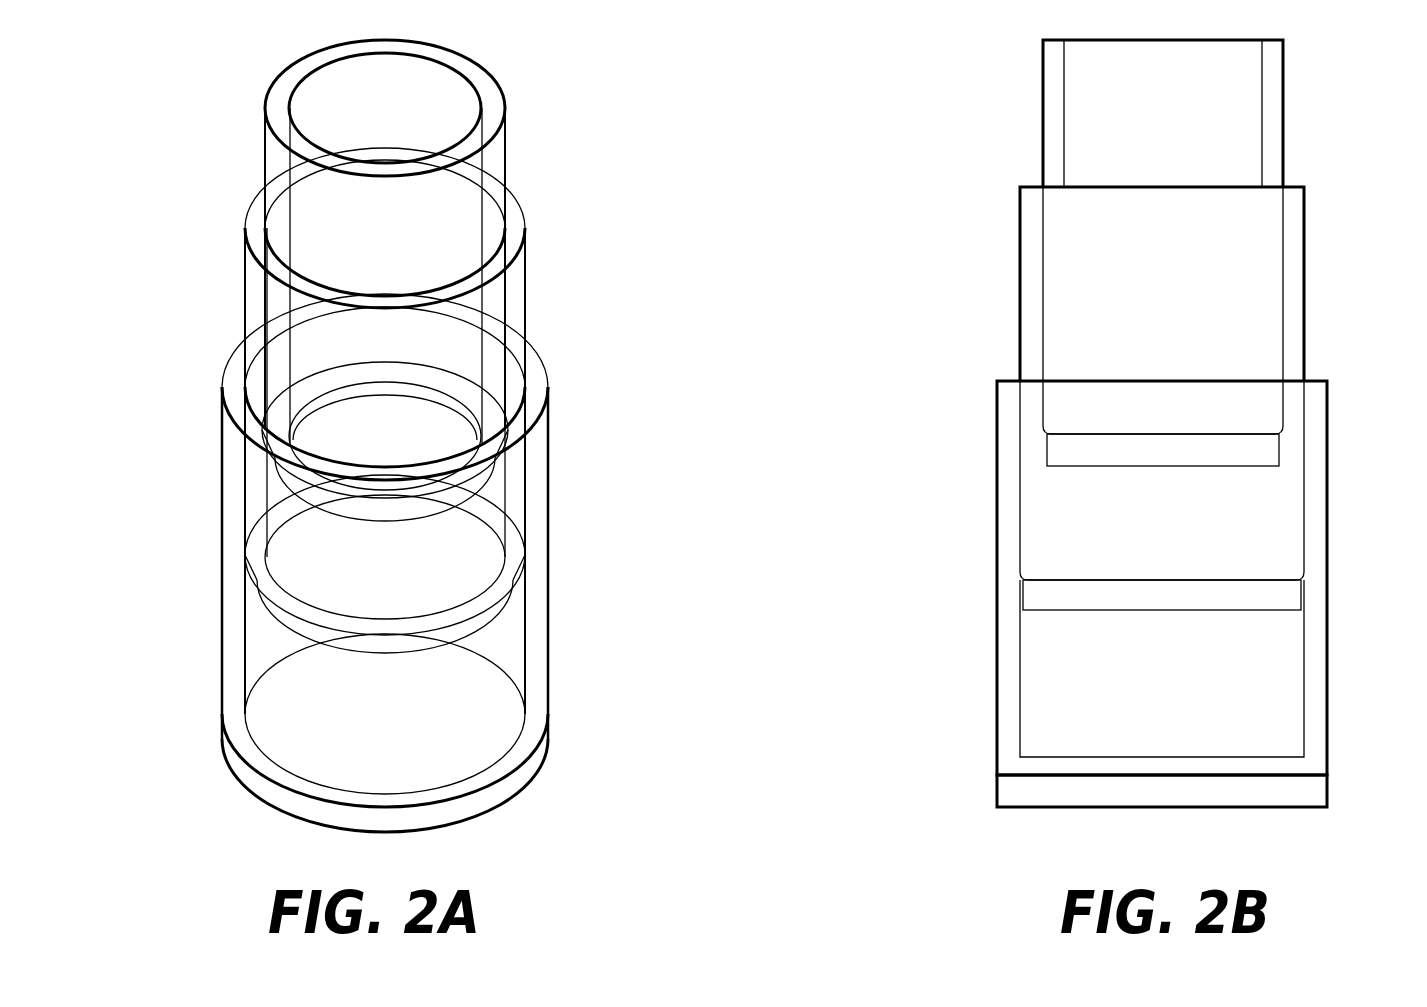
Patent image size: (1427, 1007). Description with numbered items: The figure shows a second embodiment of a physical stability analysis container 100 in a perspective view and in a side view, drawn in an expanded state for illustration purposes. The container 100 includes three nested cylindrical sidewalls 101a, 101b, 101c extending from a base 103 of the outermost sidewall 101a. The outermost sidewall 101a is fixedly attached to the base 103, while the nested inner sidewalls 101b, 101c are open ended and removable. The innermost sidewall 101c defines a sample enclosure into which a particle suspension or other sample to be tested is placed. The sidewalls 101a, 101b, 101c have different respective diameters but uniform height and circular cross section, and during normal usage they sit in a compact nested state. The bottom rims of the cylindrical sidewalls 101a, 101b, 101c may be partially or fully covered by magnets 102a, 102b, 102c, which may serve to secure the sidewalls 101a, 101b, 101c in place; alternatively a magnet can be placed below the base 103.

In FIG. 2A, the physical stability analysis container 100 is at (379, 458).
In FIG. 2B, the physical stability analysis container 100 is at (1104, 448).
In FIG. 2A, the outermost sidewall 101a is at (235, 538).
In FIG. 2B, the outermost sidewall 101a is at (1012, 440).
In FIG. 2A, the nested inner sidewall 101b is at (272, 352).
In FIG. 2B, the nested inner sidewall 101b is at (1032, 288).
In FIG. 2A, the innermost sidewall 101c is at (290, 193).
In FIG. 2B, the innermost sidewall 101c is at (1053, 106).
In FIG. 2A, the magnet 102a is at (512, 783).
In FIG. 2B, the magnet 102a is at (1282, 788).
In FIG. 2A, the magnet 102b is at (476, 628).
In FIG. 2B, the magnet 102b is at (1208, 596).
In FIG. 2A, the magnet 102c is at (413, 512).
In FIG. 2B, the magnet 102c is at (1202, 437).
In FIG. 2A, the base 103 is at (460, 810).